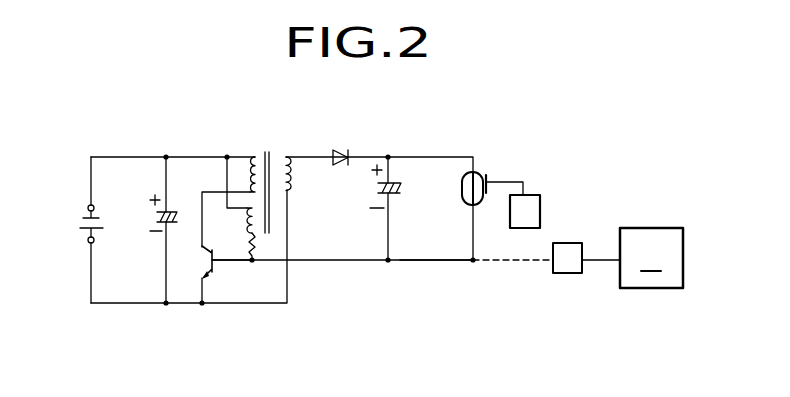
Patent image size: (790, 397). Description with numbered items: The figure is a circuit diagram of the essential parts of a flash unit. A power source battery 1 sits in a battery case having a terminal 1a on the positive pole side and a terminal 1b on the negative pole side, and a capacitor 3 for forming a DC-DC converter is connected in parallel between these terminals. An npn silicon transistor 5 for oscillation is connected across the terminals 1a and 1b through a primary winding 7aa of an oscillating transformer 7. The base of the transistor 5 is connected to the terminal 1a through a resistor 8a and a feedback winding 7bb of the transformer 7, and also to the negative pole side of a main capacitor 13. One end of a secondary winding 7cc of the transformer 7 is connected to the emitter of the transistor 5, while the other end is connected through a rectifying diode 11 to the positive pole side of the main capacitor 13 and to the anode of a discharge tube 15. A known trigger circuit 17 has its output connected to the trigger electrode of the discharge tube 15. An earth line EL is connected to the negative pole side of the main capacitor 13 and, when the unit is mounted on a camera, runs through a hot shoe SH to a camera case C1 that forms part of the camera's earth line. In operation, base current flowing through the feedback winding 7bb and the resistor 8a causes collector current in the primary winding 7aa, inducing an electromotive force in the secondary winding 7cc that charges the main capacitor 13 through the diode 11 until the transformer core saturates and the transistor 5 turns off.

The power source battery 1 is at (80, 213).
The terminal 1a is at (88, 205).
The terminal 1b is at (87, 244).
The capacitor 3 is at (153, 224).
The npn silicon transistor 5 is at (199, 253).
The oscillating transformer 7 is at (268, 182).
The primary winding 7aa is at (253, 160).
The feedback winding 7bb is at (249, 214).
The secondary winding 7cc is at (290, 188).
The resistor 8a is at (256, 253).
The rectifying diode 11 is at (348, 151).
The main capacitor 13 is at (375, 197).
The discharge tube 15 is at (462, 195).
The trigger circuit 17 is at (537, 193).
The earth line EL is at (433, 262).
The hot shoe SH is at (566, 274).
The camera case C1 is at (647, 289).